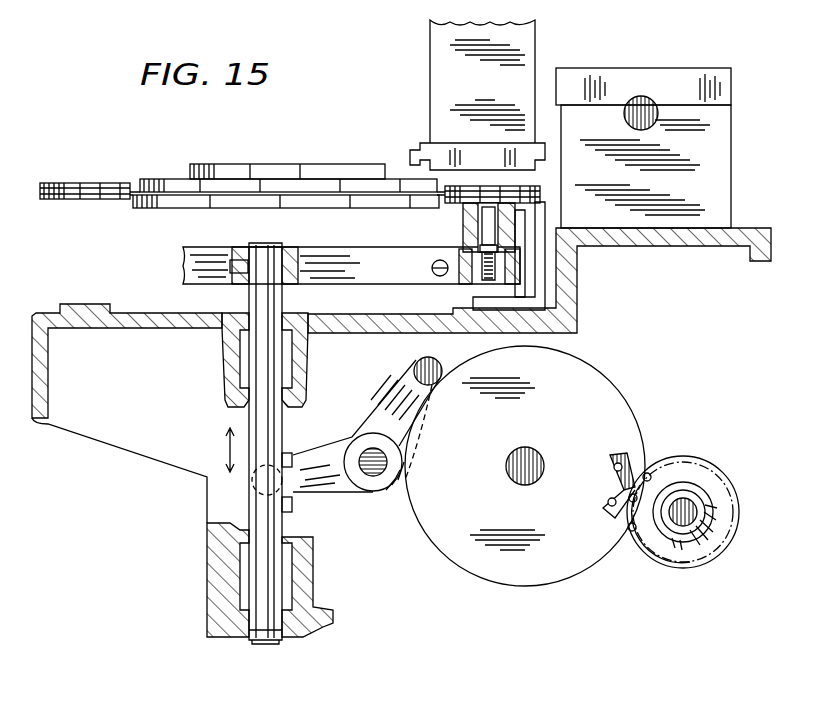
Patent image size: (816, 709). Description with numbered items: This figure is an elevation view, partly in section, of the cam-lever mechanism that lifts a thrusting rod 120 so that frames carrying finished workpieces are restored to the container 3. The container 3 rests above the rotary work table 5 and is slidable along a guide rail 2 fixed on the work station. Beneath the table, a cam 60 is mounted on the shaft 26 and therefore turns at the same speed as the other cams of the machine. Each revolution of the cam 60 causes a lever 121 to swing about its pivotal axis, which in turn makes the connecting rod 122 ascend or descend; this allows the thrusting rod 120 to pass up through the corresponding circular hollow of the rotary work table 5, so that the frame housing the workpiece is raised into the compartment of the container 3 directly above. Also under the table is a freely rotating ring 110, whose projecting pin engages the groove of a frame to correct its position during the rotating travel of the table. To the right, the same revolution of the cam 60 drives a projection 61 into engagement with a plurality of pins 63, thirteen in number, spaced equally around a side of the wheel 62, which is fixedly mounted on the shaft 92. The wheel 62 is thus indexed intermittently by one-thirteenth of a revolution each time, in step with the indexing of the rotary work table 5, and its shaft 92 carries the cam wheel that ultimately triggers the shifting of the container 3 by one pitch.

The guide rail 2 is at (412, 152).
The container 3 is at (440, 52).
The rotary work table 5 is at (180, 204).
The shaft 26 is at (530, 458).
The cam 60 is at (484, 562).
The projection 61 is at (632, 483).
The wheel 62 is at (702, 478).
The pins 63 is at (624, 533).
The shaft 92 is at (682, 522).
The freely rotating ring 110 is at (72, 202).
The thrusting rod 120 is at (467, 225).
The lever 121 is at (330, 486).
The connecting rod 122 is at (282, 426).